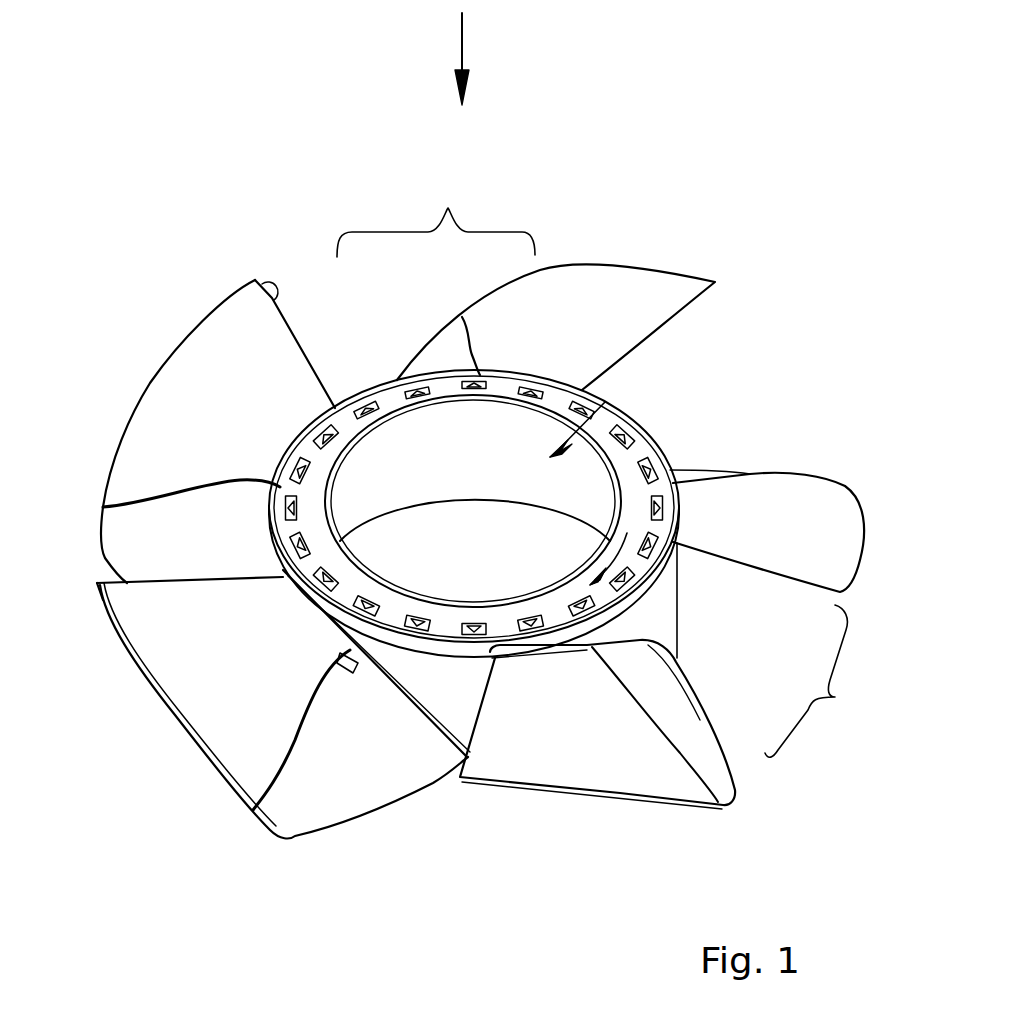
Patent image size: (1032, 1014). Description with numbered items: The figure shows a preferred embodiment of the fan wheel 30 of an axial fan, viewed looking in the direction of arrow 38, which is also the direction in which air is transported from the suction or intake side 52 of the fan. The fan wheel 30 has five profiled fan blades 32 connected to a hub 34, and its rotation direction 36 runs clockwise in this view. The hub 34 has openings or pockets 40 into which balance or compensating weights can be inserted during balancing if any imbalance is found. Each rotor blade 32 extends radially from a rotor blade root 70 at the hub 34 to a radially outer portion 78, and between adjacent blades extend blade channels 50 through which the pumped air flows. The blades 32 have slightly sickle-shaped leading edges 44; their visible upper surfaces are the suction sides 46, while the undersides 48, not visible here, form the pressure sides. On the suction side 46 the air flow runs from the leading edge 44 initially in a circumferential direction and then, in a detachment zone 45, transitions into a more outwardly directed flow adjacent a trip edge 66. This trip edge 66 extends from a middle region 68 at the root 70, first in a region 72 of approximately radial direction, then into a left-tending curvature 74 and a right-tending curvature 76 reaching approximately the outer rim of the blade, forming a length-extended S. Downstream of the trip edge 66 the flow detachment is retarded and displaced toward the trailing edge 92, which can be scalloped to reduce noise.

The fan wheel 30 is at (543, 181).
The fan blade 32 is at (288, 318).
The hub 34 is at (470, 383).
The rotation direction 36 is at (617, 537).
The arrow 38 is at (481, 57).
The openings or pockets 40 is at (662, 458).
The leading edge 44 is at (307, 370).
The detachment zone 45 is at (247, 547).
The suction side 46 is at (247, 442).
The underside 48 is at (273, 296).
The blade channel 50 is at (614, 462).
The suction or intake side 52 is at (605, 402).
The trip edge 66 is at (183, 493).
The middle region 68 is at (310, 618).
The rotor blade root 70 is at (440, 733).
The region with approximately radial direction 72 is at (340, 668).
The left-tending curvature 74 is at (313, 703).
The right-tending curvature 76 is at (297, 757).
The radially outer portion 78 is at (150, 385).
The trailing edge 92 is at (100, 558).